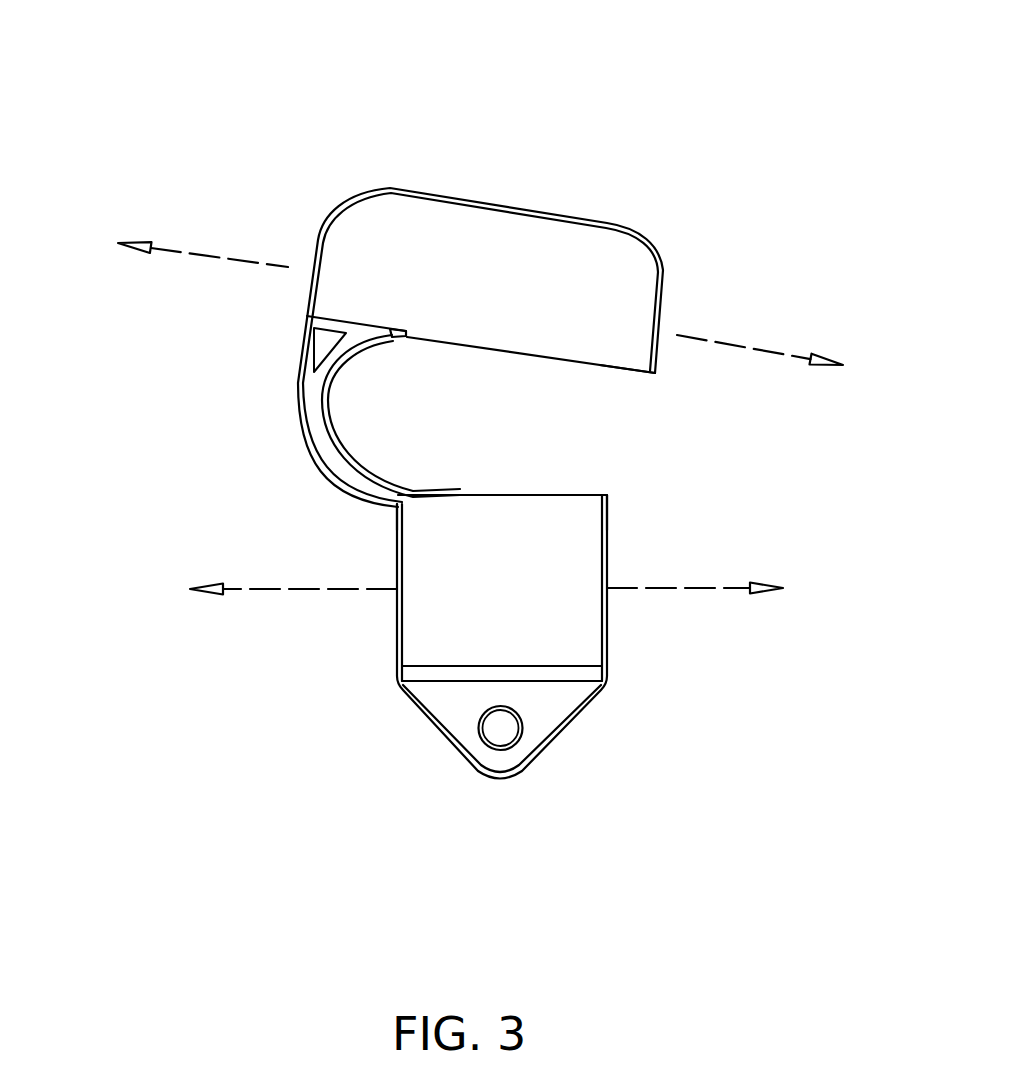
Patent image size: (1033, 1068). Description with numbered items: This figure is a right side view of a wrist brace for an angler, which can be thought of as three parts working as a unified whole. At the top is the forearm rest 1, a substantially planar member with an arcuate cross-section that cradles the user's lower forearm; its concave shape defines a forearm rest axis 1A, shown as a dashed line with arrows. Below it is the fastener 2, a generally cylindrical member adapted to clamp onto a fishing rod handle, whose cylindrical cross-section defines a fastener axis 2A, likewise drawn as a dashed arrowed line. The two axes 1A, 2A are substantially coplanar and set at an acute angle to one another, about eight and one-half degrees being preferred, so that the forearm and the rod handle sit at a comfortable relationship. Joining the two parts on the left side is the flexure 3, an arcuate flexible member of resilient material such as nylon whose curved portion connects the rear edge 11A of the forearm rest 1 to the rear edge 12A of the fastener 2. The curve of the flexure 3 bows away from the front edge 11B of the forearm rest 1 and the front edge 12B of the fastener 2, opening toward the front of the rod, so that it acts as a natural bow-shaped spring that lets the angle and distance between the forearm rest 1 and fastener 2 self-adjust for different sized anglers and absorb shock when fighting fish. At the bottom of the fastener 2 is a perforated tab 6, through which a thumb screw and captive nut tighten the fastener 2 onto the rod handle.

The forearm rest 1 is at (468, 438).
The forearm rest axis 1A is at (768, 347).
The fastener 2 is at (433, 653).
The fastener axis 2A is at (663, 590).
The flexure 3 is at (468, 347).
The perforated tab 6 is at (447, 705).
The rear edge of forearm rest 11A is at (313, 317).
The front edge of forearm rest 11B is at (655, 373).
The rear edge of fastener 12A is at (397, 510).
The front edge of fastener 12B is at (607, 493).